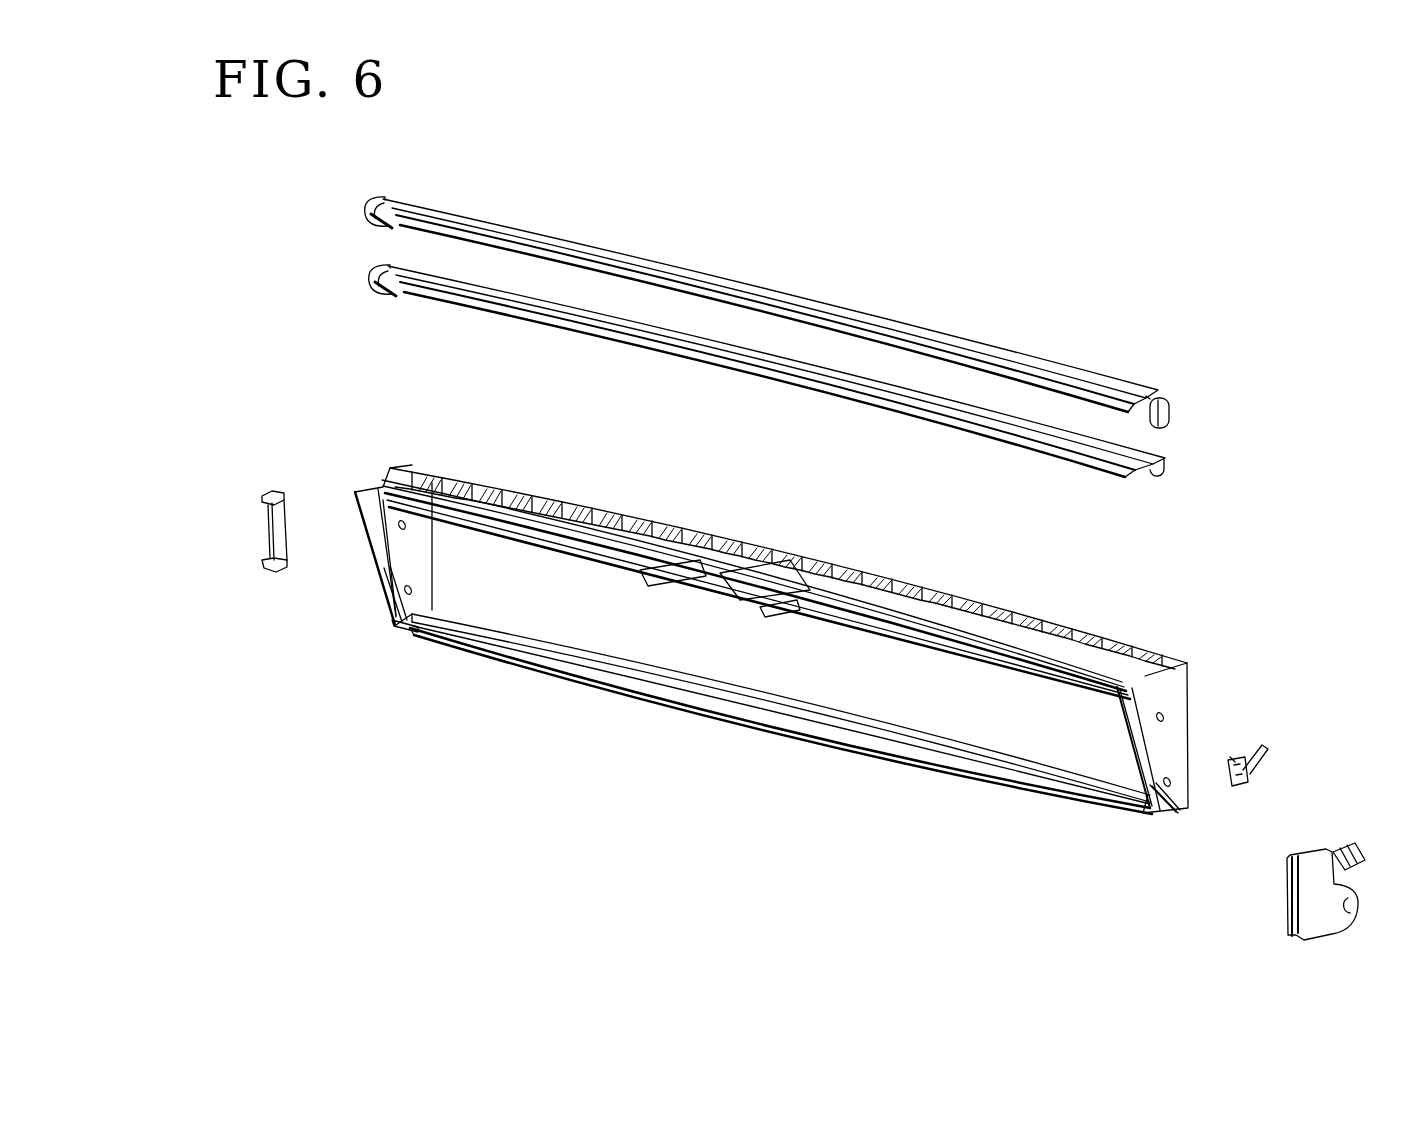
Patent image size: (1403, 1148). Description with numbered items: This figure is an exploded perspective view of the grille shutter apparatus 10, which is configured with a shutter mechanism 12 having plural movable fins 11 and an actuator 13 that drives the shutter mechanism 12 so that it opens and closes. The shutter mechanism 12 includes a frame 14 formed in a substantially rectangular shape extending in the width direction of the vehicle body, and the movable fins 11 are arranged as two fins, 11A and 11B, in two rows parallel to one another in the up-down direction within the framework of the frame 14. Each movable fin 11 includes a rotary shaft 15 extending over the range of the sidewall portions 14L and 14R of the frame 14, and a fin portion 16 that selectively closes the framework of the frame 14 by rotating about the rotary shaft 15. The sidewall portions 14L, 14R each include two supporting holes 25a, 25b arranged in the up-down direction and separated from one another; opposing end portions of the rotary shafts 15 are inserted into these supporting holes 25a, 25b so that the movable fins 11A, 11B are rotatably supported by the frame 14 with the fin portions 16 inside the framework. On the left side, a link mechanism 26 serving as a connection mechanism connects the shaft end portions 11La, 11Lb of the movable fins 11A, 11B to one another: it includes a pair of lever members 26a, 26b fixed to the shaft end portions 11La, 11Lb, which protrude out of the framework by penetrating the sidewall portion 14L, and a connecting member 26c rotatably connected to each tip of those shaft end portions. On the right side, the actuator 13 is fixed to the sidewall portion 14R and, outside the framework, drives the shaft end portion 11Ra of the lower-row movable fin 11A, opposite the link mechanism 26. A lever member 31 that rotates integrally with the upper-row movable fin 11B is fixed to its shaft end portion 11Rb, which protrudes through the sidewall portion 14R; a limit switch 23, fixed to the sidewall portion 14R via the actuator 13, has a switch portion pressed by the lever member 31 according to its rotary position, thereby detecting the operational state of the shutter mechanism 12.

The grille shutter apparatus 10 is at (1228, 179).
The movable fins 11 is at (736, 218).
The movable fin 11A is at (704, 384).
The movable fin 11B is at (718, 292).
The shaft end portion 11La is at (392, 266).
The shaft end portion 11Lb is at (405, 181).
The shaft end portion 11Ra is at (1157, 473).
The shaft end portion 11Rb is at (1143, 392).
The shutter mechanism 12 is at (562, 734).
The actuator 13 is at (1287, 893).
The frame 14 is at (808, 574).
The sidewall portion 14L is at (432, 564).
The sidewall portion 14R is at (1172, 688).
The rotary shaft 15 is at (643, 270).
The fin portion 16 is at (701, 275).
The limit switch 23 is at (1246, 784).
The supporting hole 25a is at (402, 600).
The supporting hole 25b is at (398, 527).
The link mechanism 26 is at (313, 504).
The lever member 26a is at (364, 282).
The lever member 26b is at (358, 215).
The connecting member 26c is at (272, 490).
The lever member 31 is at (1171, 413).